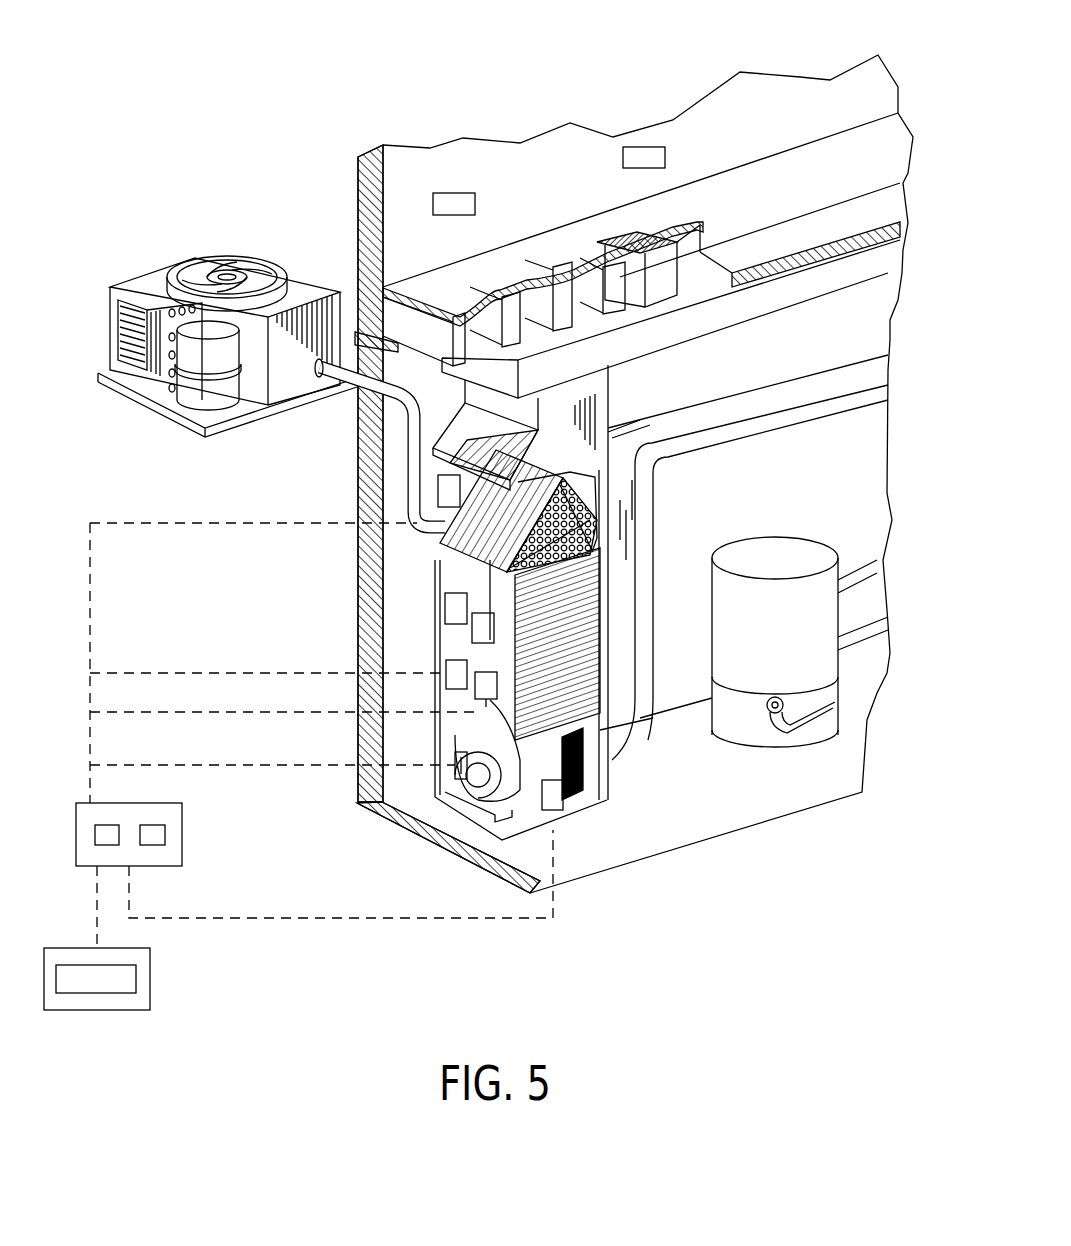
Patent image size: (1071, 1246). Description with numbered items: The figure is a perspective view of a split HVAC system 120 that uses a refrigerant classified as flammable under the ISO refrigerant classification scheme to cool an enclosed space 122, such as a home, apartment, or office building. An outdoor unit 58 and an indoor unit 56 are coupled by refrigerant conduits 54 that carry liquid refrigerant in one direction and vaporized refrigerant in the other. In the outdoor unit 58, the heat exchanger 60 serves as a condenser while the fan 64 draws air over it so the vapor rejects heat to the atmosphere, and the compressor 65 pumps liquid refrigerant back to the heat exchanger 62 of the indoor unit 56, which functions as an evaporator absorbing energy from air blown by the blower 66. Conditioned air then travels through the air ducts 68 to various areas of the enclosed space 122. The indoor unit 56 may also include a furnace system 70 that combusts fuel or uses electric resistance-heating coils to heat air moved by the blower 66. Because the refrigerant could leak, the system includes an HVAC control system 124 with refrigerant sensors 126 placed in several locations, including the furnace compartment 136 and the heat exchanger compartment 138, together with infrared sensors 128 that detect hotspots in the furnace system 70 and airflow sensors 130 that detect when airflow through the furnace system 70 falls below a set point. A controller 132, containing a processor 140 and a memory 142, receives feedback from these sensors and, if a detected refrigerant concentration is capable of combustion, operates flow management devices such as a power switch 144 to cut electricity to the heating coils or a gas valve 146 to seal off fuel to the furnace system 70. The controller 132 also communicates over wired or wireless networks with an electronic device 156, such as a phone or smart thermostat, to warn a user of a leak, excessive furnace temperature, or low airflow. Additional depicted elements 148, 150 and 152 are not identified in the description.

The enclosed space 122 is at (552, 148).
The sensors 148 is at (455, 193).
The outdoor unit 58 is at (178, 260).
The fan 64 is at (228, 258).
The heat exchanger 60 is at (160, 303).
The compressor 65 is at (197, 396).
The air ducts 68 is at (653, 290).
The heat exchanger compartment 138 is at (606, 470).
The refrigerant conduits 54 is at (407, 430).
The sensors 126 is at (437, 490).
The HVAC control system 124 is at (78, 633).
The heat exchanger 62 is at (478, 550).
The furnace system 70 is at (560, 560).
The infrared sensors 128 is at (475, 612).
The indoor unit 56 is at (418, 619).
The airflow sensors 130 is at (545, 576).
The furnace compartment 136 is at (608, 617).
The processor 140 is at (106, 825).
The controller 132 is at (165, 803).
The memory 142 is at (155, 845).
The power switch 144 is at (450, 775).
The blower 66 is at (473, 797).
The gas valve 146 is at (505, 692).
The water tank 150 is at (723, 738).
The valve 152 is at (767, 705).
The electronic device 156 is at (160, 978).
The split HVAC system 120 is at (295, 965).